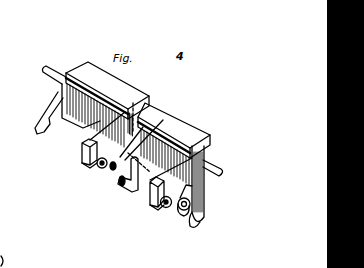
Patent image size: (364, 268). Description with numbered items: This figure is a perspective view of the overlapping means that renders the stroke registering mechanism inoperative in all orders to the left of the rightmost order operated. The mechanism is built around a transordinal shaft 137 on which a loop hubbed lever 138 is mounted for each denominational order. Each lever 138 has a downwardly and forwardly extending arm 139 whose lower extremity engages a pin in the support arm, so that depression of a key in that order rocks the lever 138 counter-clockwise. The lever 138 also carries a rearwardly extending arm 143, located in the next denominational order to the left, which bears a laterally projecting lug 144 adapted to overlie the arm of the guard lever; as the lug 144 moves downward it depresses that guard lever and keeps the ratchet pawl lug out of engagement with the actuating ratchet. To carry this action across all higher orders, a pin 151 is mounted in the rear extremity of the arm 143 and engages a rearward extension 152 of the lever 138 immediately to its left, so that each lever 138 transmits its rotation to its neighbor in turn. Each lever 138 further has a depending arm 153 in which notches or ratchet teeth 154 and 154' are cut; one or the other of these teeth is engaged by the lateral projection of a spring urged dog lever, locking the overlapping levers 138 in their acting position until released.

The transordinal shaft 137 is at (211, 163).
The loop hubbed lever 138 is at (124, 95).
The downwardly and forwardly extending arm 139 is at (78, 133).
The rearwardly extending arm 143 is at (96, 170).
The laterally projecting lug 144 is at (80, 145).
The pin 151 is at (93, 164).
The rearward extension 152 is at (50, 108).
The depending arm 153 is at (204, 208).
The ratchet tooth 154 is at (211, 229).
The ratchet tooth 154' is at (201, 235).